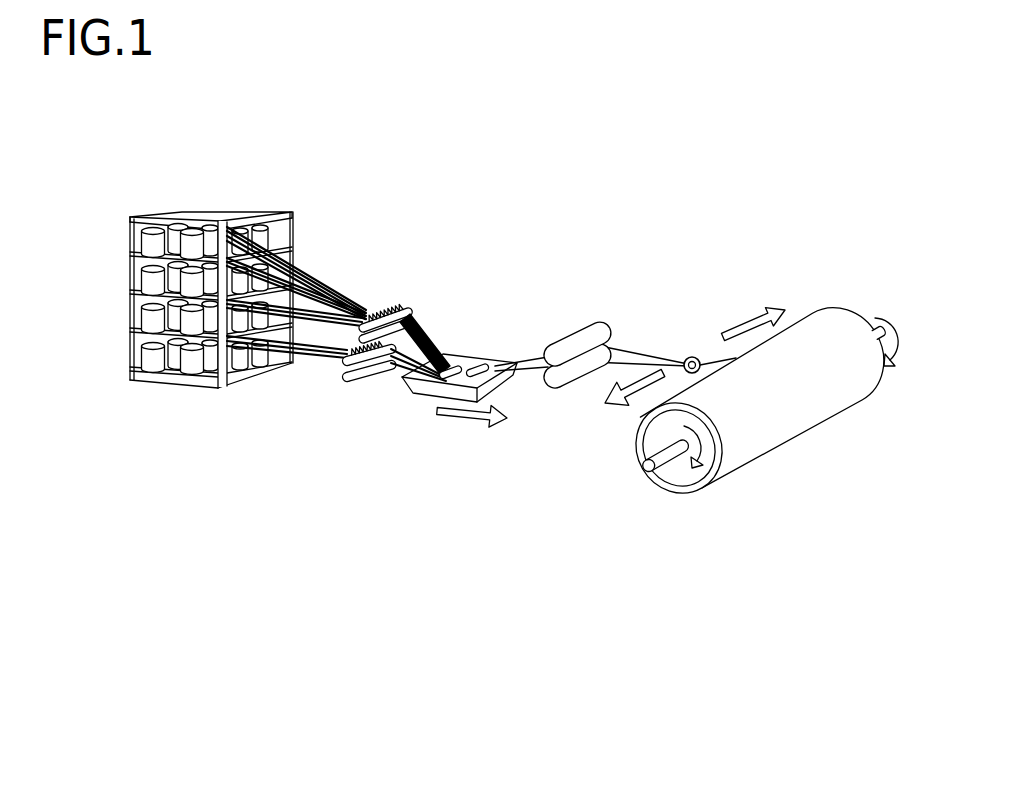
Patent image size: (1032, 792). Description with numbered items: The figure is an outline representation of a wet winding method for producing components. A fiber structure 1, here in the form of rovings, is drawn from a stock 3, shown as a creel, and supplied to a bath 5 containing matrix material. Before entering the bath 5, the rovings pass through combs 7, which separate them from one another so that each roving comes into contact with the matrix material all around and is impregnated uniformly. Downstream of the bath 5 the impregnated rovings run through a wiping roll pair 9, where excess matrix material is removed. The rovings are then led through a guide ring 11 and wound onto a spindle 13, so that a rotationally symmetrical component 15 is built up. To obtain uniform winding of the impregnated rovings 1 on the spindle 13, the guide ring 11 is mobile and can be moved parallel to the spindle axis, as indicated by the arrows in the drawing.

The fiber structure 1 is at (310, 264).
The stock 3 is at (152, 371).
The bath 5 is at (471, 357).
The combs 7 is at (410, 311).
The wiping roll pair 9 is at (602, 320).
The guide ring 11 is at (692, 357).
The spindle 13 is at (658, 468).
The rotationally symmetrical component 15 is at (812, 330).